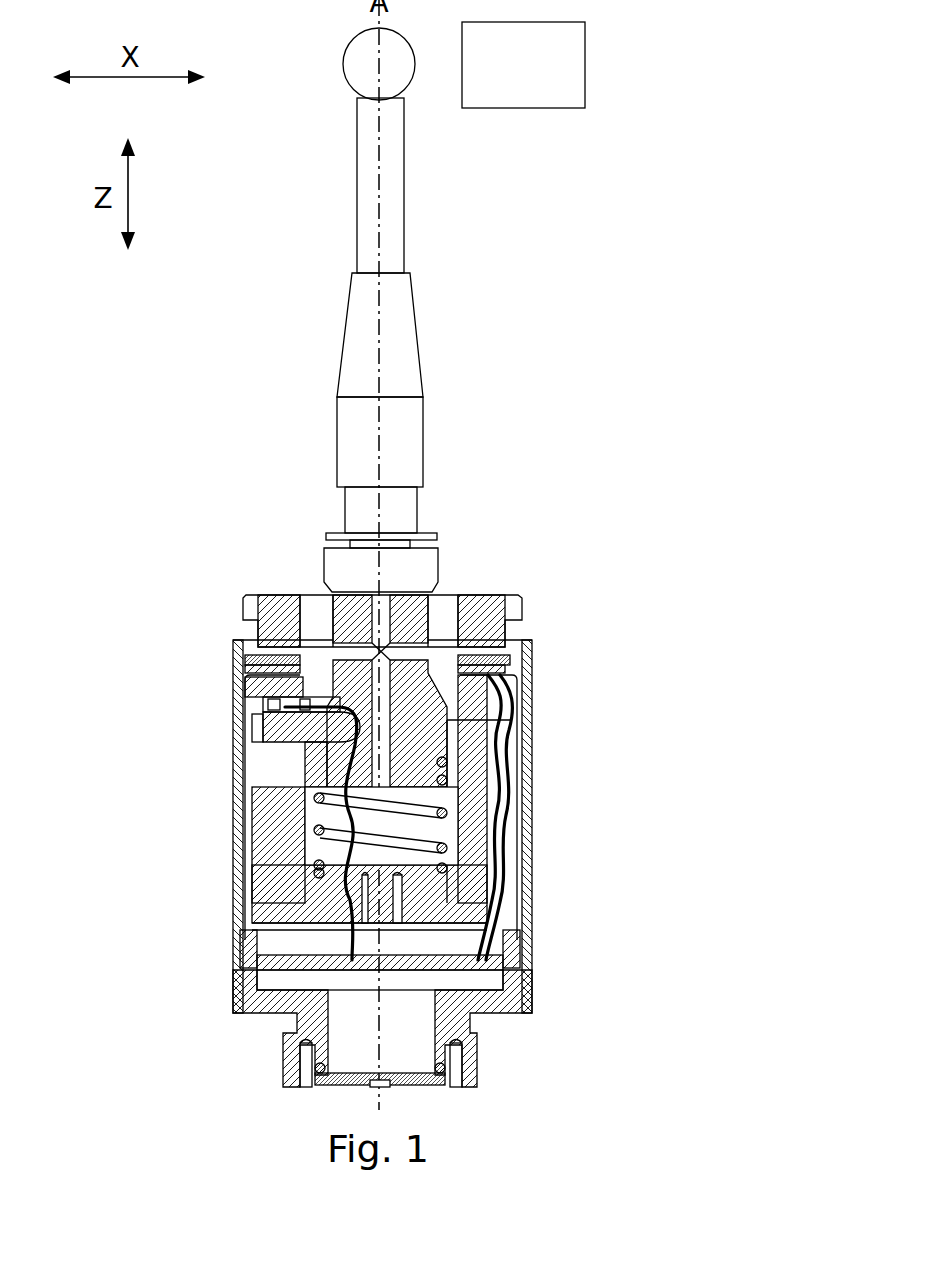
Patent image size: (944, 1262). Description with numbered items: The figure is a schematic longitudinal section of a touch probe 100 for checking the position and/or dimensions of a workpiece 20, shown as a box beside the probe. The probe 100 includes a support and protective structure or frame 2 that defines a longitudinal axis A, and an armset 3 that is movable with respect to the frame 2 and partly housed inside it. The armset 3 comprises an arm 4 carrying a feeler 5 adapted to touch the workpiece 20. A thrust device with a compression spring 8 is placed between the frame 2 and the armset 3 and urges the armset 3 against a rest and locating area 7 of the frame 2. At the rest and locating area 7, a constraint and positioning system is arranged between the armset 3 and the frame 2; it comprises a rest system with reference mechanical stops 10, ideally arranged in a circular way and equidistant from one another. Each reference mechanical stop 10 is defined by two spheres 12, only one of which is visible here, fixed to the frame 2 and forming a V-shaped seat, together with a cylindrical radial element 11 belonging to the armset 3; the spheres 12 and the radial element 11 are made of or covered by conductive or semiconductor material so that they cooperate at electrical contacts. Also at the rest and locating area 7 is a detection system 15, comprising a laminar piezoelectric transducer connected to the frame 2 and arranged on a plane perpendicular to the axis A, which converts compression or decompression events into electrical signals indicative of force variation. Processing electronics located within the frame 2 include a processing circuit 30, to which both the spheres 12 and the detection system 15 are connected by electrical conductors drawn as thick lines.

The support and protective structure or frame 2 is at (512, 600).
The armset 3 is at (350, 630).
The arm 4 is at (355, 350).
The feeler 5 is at (365, 60).
The rest and locating area 7 is at (258, 685).
The compression spring 8 is at (333, 835).
The reference mechanical stops 10 is at (256, 726).
The radial element 11 is at (282, 728).
The spheres 12 is at (265, 706).
The detection system 15 is at (255, 667).
The workpiece 20 is at (564, 66).
The processing circuit 30 is at (440, 962).
The touch probe 100 is at (512, 465).